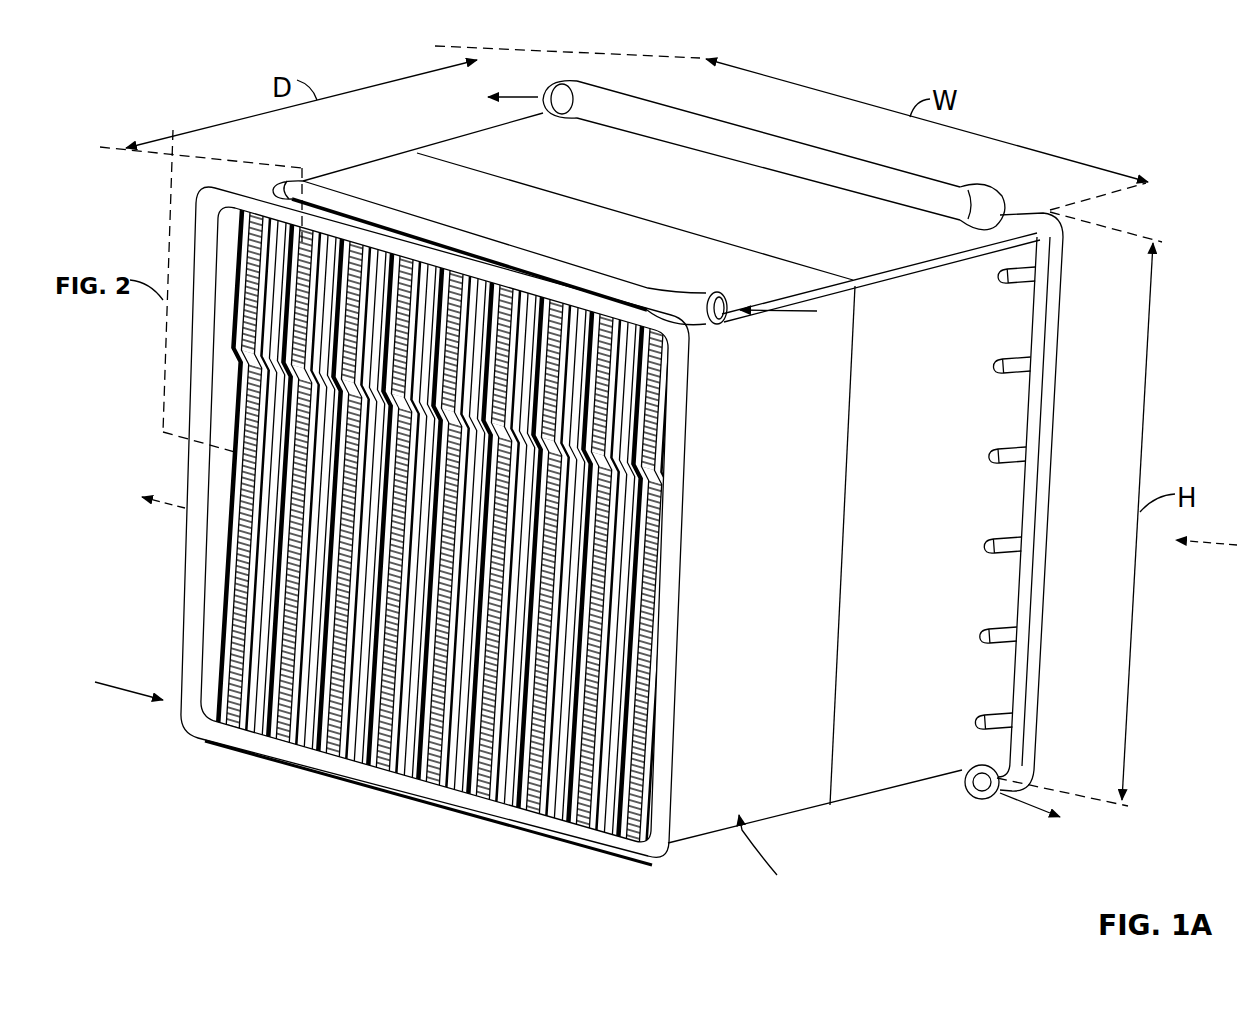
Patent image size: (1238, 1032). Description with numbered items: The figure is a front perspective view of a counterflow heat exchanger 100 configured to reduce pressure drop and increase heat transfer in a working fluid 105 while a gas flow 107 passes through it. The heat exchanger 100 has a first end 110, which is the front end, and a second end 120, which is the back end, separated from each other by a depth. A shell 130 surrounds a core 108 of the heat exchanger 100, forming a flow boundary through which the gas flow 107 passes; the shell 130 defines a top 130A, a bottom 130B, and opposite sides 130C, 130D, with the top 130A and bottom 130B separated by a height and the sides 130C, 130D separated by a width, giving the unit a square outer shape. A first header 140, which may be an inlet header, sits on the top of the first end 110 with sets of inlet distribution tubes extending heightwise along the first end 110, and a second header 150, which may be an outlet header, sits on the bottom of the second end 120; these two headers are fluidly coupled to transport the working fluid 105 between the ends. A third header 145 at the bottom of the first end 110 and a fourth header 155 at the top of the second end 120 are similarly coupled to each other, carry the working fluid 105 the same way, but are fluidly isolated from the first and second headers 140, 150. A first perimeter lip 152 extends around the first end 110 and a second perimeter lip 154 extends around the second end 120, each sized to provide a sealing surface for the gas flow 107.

The heat exchanger 100 is at (577, 44).
The working fluid 105 is at (1040, 825).
The gas flow 107 is at (160, 514).
The core 108 is at (772, 865).
The first end 110 is at (372, 556).
The second end 120 is at (1030, 99).
The shell 130 is at (658, 511).
The top 130A is at (711, 195).
The bottom 130B is at (688, 843).
The side 130C is at (363, 168).
The side 130D is at (787, 788).
The first header 140 is at (722, 320).
The third header 145 is at (420, 821).
The second header 150 is at (957, 772).
The first perimeter lip 152 is at (537, 838).
The second perimeter lip 154 is at (1052, 560).
The fourth header 155 is at (805, 155).